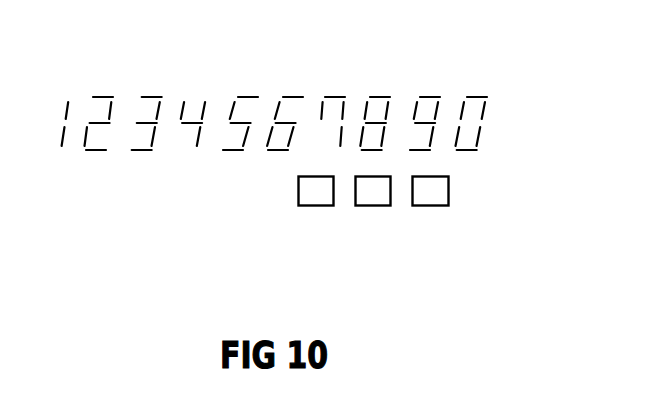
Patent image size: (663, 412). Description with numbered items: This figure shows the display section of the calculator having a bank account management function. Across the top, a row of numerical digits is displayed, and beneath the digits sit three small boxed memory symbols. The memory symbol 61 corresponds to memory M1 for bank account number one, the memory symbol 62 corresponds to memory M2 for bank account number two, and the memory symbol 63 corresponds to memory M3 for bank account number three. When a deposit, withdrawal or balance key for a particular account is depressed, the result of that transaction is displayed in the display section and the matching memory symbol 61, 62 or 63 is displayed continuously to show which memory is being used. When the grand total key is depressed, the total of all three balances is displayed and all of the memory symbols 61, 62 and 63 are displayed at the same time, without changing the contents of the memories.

The memory symbol 61 is at (433, 207).
The memory symbol 62 is at (377, 207).
The memory symbol 63 is at (315, 207).